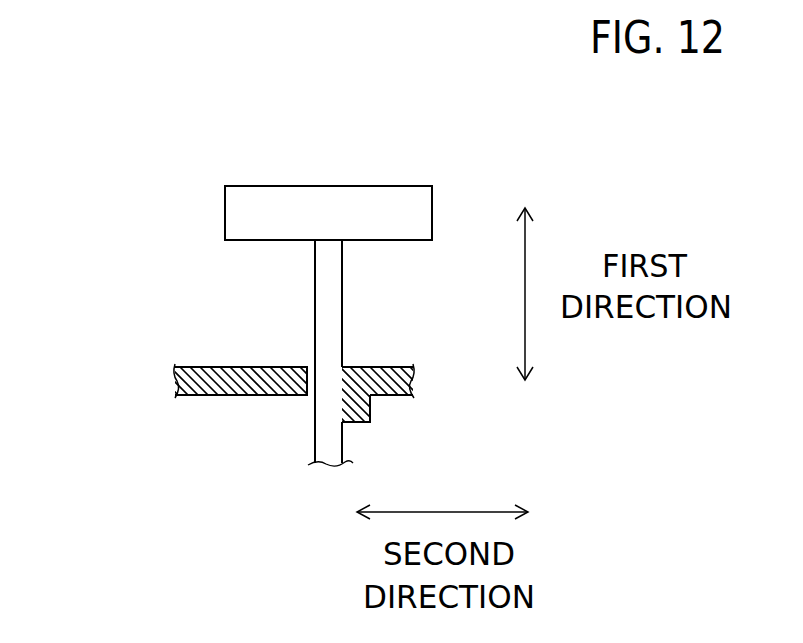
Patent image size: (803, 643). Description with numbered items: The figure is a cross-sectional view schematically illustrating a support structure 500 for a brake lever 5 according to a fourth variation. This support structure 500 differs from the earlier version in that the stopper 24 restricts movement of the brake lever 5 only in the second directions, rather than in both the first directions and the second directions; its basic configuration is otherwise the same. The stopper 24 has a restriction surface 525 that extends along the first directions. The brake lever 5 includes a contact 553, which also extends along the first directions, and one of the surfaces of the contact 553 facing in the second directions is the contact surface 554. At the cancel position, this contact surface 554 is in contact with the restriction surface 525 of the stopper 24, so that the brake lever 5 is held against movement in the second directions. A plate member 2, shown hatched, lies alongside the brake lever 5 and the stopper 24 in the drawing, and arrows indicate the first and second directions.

The support structure 500 is at (160, 208).
The substrate 2 is at (205, 367).
The brake lever 5 is at (343, 353).
The contact 553 is at (343, 323).
The contact surface 554 is at (343, 397).
The restriction surface 525 is at (343, 398).
The stopper 24 is at (358, 423).